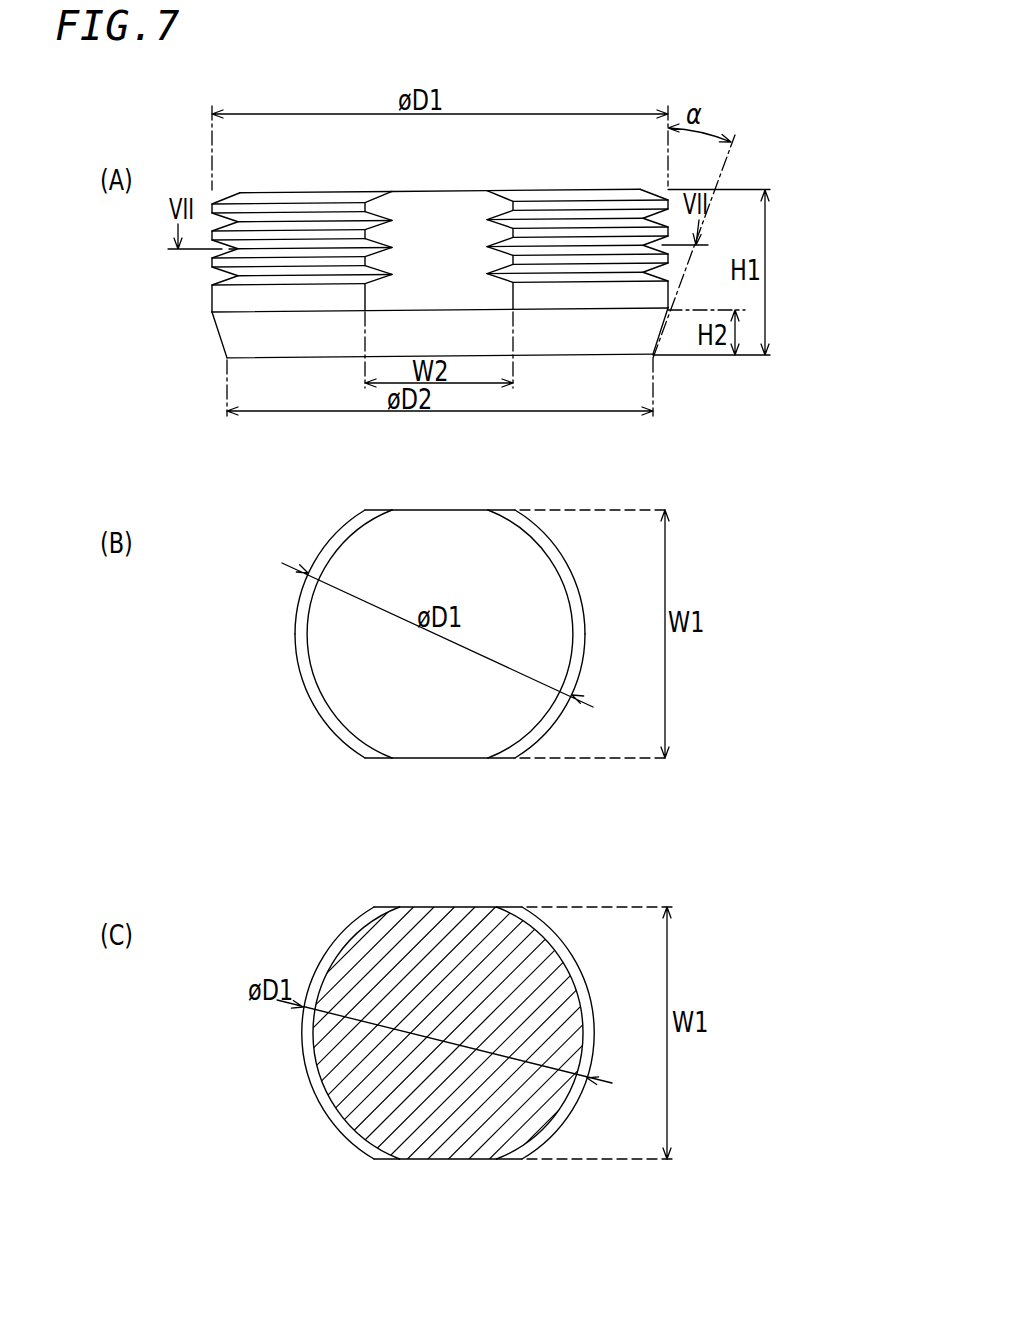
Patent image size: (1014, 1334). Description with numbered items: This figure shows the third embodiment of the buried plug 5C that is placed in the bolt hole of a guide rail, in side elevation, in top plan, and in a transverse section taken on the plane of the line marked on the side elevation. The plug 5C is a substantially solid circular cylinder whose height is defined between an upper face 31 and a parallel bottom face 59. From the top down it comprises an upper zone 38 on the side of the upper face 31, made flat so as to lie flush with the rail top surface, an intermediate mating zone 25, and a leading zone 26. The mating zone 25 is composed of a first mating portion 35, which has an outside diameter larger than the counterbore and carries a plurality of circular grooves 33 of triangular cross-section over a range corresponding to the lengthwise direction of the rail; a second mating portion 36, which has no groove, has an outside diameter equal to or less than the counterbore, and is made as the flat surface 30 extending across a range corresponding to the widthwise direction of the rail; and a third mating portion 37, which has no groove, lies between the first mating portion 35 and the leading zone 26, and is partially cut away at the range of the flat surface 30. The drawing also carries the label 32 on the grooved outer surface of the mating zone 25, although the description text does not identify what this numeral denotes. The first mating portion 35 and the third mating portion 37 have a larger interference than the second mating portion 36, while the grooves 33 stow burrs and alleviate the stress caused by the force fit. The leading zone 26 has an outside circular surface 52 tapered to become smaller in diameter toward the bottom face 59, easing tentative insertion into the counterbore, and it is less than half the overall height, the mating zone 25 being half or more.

The buried plug 5C is at (541, 174).
The mating zone 25 is at (404, 658).
The leading zone 26 is at (610, 343).
The flat surface 30 is at (413, 510).
The upper face 31 is at (331, 193).
The external thread 32 is at (212, 204).
The grooves 33 is at (212, 280).
The first mating portion 35 is at (595, 218).
The second mating portion 36 is at (438, 217).
The third mating portion 37 is at (572, 303).
The upper zone 38 is at (283, 203).
The outside circular surface 52 is at (217, 333).
The bottom face 59 is at (308, 360).